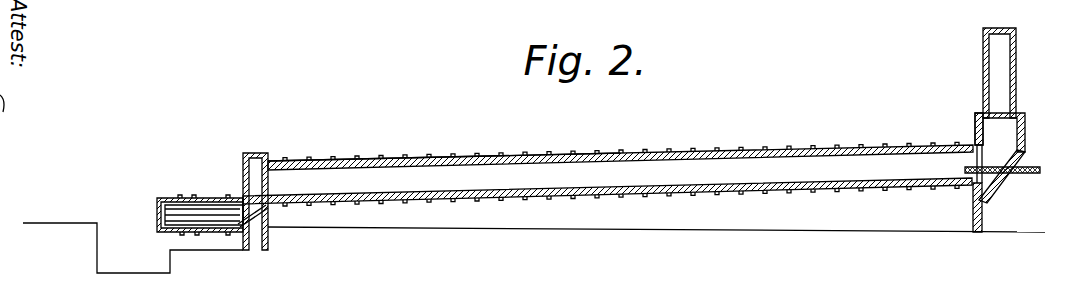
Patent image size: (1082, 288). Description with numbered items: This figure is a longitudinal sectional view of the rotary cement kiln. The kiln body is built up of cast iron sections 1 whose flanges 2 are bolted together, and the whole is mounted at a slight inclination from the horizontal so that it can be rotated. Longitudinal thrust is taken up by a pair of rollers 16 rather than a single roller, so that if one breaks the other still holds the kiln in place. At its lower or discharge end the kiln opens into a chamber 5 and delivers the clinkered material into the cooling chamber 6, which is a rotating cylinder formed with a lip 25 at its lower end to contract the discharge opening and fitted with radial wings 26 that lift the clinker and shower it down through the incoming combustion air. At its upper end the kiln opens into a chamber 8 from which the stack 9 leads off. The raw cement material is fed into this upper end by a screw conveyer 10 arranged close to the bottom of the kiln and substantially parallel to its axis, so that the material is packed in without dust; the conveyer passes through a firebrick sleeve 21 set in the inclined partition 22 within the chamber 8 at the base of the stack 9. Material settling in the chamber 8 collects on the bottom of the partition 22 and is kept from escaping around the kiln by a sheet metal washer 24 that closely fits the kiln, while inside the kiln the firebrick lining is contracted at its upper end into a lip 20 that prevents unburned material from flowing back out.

The cast iron sections 1 is at (620, 155).
The flanges 2 is at (673, 153).
The chamber 5 is at (255, 192).
The cooling chamber 6 is at (200, 207).
The chamber 8 is at (1006, 132).
The stack 9 is at (1006, 73).
The screw conveyer 10 is at (1037, 175).
The rollers 16 is at (320, 162).
The lip 20 is at (973, 150).
The firebrick sleeve 21 is at (1007, 178).
The inclined partition 22 is at (1017, 163).
The sheet metal washer 24 is at (975, 137).
The lip 25 is at (158, 207).
The radial wings 26 is at (160, 218).